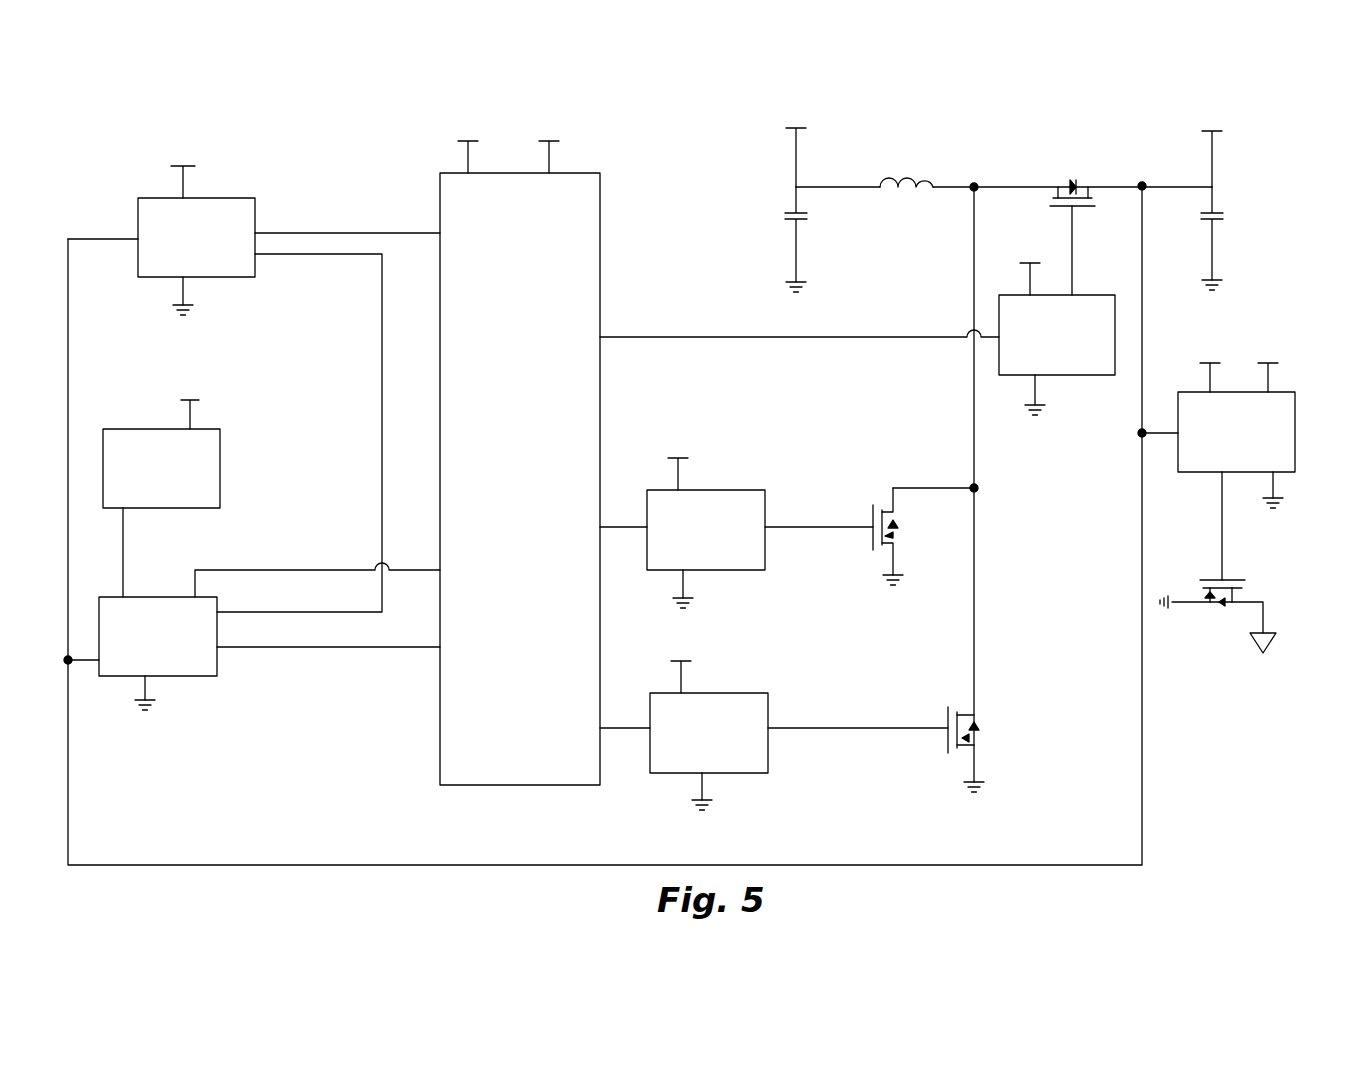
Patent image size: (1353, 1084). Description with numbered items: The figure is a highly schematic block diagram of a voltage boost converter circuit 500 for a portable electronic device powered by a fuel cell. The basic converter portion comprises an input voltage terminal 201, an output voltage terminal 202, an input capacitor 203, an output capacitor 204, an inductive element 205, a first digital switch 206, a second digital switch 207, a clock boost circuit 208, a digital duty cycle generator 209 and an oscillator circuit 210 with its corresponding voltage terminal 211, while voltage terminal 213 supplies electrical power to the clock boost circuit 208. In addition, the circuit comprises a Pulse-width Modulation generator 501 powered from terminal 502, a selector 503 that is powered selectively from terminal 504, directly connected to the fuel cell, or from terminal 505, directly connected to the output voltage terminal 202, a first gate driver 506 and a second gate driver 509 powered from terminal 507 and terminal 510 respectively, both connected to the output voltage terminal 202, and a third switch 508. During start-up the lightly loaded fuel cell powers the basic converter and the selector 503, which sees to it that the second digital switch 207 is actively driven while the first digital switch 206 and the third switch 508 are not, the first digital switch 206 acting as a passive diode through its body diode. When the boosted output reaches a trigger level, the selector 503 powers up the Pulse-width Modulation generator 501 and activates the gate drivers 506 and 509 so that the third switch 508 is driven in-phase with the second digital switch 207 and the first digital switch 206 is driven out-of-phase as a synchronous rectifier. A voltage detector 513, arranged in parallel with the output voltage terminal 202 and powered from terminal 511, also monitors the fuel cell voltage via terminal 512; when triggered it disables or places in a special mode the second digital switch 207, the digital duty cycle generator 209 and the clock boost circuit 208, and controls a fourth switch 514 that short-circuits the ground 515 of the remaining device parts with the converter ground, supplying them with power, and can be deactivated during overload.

The voltage boost converter circuit 500 is at (360, 150).
The Pulse-width Modulation (PWM) generator 501 is at (220, 279).
The terminal 502 is at (188, 166).
The selector 503 is at (440, 712).
The terminal 504 is at (458, 143).
The terminal 505 is at (556, 144).
The first gate driver 506 is at (757, 489).
The terminal 507 is at (684, 460).
The third switch 508 is at (873, 502).
The second gate driver 509 is at (1055, 378).
The terminal 510 is at (1024, 265).
The terminal 511 is at (1204, 360).
The terminal 512 is at (1272, 362).
The voltage detector 513 is at (1192, 476).
The fourth switch 514 is at (1238, 590).
The ground 515 is at (1250, 634).
The input voltage terminal 201 is at (786, 130).
The output voltage terminal 202 is at (1200, 133).
The input capacitor 203 is at (808, 220).
The output capacitor 204 is at (1245, 222).
The inductive element 205 is at (905, 180).
The first digital switch 206 is at (1058, 197).
The second digital switch 207 is at (978, 754).
The clock boost circuit 208 is at (756, 775).
The digital duty cycle generator 209 is at (185, 678).
The oscillator circuit 210 is at (222, 458).
The voltage terminal 211 is at (184, 402).
The voltage terminal 213 is at (688, 664).